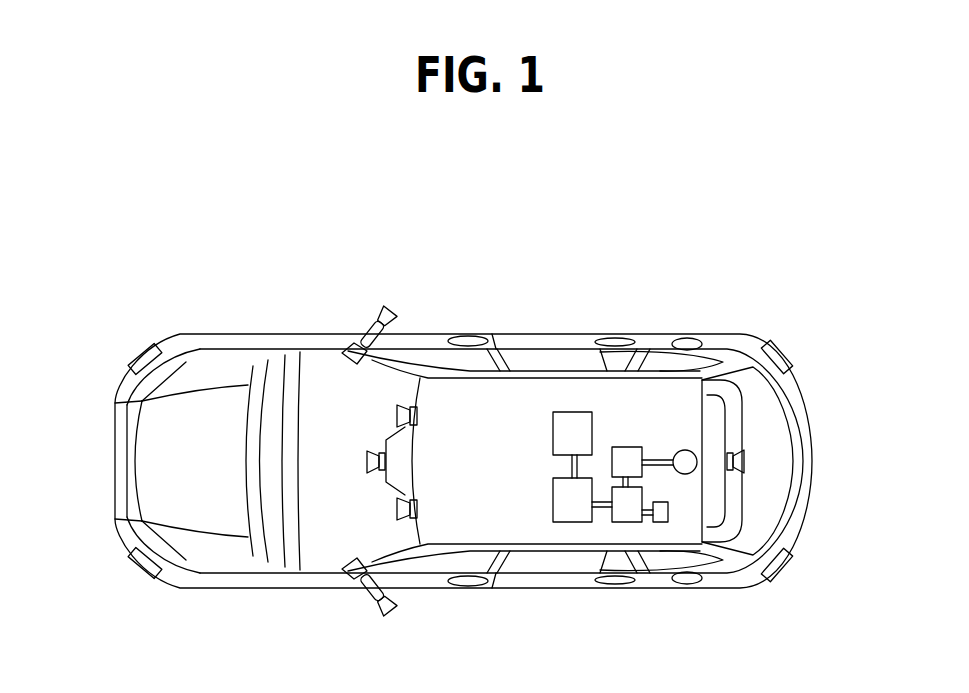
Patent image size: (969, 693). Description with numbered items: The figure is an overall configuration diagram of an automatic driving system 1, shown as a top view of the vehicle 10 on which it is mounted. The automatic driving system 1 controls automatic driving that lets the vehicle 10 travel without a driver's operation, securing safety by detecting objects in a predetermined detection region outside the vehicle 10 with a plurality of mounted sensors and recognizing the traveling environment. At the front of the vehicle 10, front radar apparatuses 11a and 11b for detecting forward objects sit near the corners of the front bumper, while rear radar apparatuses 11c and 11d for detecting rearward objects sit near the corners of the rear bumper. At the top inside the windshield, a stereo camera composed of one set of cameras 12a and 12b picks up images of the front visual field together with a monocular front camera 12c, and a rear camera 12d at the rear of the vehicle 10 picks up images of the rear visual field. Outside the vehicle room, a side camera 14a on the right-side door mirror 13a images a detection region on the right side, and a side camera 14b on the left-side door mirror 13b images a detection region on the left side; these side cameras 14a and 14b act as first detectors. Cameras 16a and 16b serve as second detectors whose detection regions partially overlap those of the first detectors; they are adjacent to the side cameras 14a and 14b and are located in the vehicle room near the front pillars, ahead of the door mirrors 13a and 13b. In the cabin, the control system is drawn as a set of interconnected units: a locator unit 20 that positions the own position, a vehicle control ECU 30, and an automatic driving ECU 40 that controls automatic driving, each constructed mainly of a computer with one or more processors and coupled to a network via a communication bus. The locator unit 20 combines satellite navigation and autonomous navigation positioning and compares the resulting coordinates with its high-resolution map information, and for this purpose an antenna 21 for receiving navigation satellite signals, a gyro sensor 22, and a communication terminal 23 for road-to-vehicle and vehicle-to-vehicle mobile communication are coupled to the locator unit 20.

The automatic driving system 1 is at (660, 398).
The vehicle 10 is at (548, 334).
The front radar apparatus 11a is at (132, 360).
The front radar apparatus 11b is at (132, 560).
The rear radar apparatus 11c is at (790, 360).
The rear radar apparatus 11d is at (790, 562).
The camera 12a is at (395, 413).
The camera 12b is at (395, 510).
The monocular front camera 12c is at (366, 462).
The rear camera 12d is at (746, 455).
The right-side door mirror 13a is at (367, 344).
The left-side door mirror 13b is at (367, 598).
The side camera 14a is at (397, 310).
The side camera 14b is at (396, 614).
The camera 16a is at (347, 343).
The camera 16b is at (345, 580).
The locator unit 20 is at (626, 524).
The antenna 21 is at (684, 450).
The gyro sensor 22 is at (626, 446).
The communication terminal 23 is at (660, 524).
The vehicle control ECU 30 is at (552, 502).
The automatic driving ECU 40 is at (552, 437).